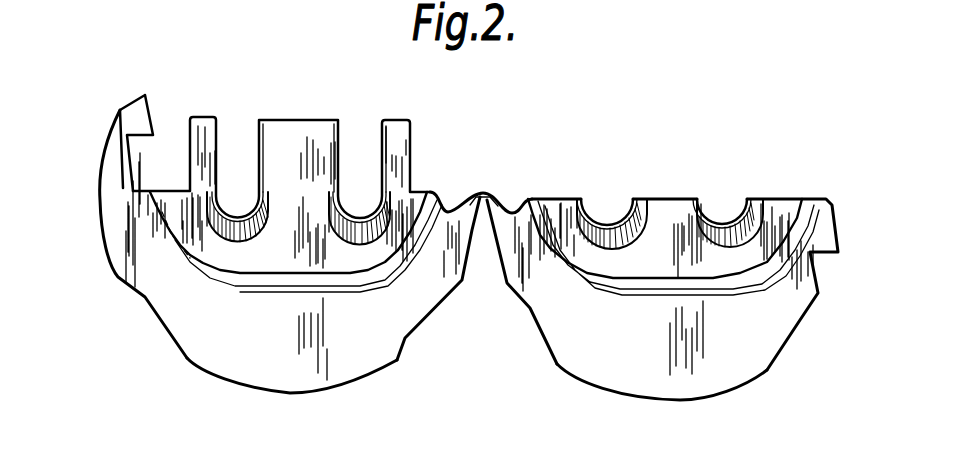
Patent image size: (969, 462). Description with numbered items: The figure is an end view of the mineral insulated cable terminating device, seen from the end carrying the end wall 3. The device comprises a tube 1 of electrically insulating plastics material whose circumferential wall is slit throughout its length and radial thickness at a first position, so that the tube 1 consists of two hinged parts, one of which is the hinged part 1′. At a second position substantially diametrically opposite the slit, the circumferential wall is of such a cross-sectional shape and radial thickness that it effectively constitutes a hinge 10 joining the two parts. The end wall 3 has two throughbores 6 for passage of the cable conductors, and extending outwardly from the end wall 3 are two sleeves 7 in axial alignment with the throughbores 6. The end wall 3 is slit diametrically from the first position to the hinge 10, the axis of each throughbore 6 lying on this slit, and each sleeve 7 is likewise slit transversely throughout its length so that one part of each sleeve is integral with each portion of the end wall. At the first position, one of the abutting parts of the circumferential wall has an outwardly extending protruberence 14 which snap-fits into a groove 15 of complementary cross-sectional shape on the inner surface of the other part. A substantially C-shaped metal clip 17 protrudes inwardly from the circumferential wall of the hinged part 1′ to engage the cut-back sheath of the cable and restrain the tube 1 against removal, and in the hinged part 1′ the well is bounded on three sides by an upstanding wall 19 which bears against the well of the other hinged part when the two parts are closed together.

The tube 1 is at (231, 392).
The hinged part 1′ is at (144, 302).
The end wall 3 is at (398, 325).
The throughbore 6 is at (238, 182).
The sleeve 7 is at (358, 208).
The hinge 10 is at (483, 189).
The protruberence 14 is at (826, 218).
The groove 15 is at (122, 151).
The metal clip 17 is at (411, 148).
The upstanding wall 19 is at (300, 118).